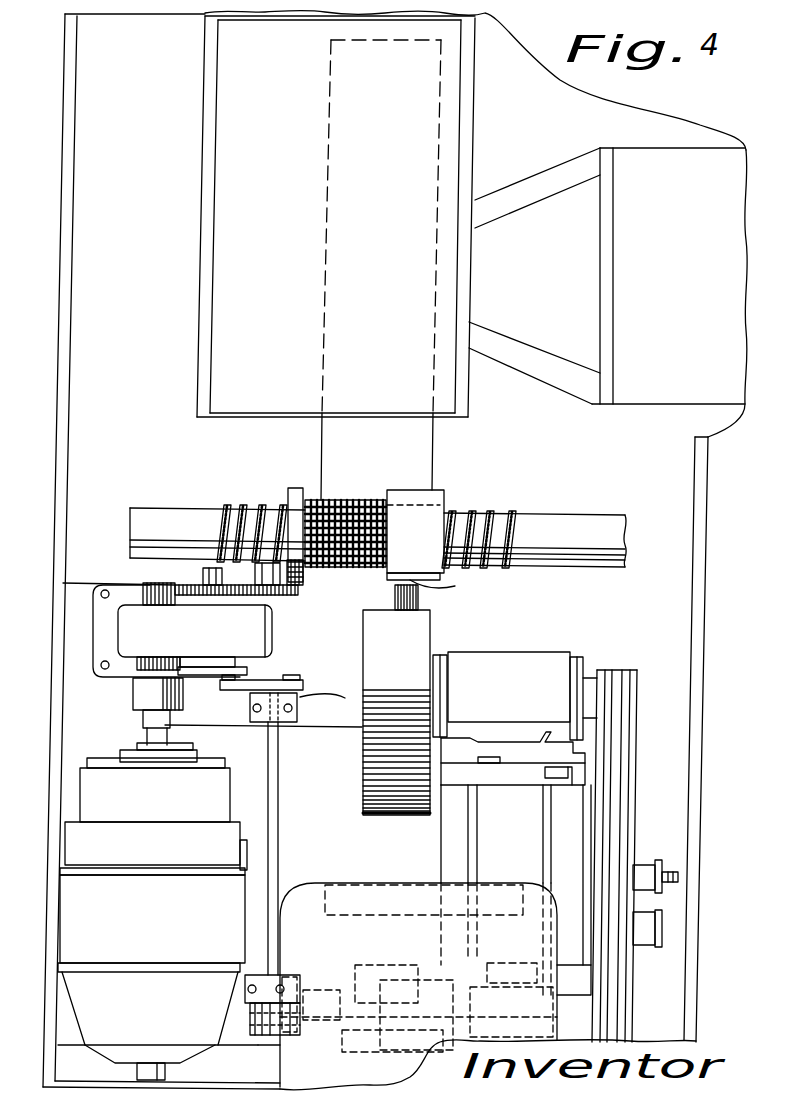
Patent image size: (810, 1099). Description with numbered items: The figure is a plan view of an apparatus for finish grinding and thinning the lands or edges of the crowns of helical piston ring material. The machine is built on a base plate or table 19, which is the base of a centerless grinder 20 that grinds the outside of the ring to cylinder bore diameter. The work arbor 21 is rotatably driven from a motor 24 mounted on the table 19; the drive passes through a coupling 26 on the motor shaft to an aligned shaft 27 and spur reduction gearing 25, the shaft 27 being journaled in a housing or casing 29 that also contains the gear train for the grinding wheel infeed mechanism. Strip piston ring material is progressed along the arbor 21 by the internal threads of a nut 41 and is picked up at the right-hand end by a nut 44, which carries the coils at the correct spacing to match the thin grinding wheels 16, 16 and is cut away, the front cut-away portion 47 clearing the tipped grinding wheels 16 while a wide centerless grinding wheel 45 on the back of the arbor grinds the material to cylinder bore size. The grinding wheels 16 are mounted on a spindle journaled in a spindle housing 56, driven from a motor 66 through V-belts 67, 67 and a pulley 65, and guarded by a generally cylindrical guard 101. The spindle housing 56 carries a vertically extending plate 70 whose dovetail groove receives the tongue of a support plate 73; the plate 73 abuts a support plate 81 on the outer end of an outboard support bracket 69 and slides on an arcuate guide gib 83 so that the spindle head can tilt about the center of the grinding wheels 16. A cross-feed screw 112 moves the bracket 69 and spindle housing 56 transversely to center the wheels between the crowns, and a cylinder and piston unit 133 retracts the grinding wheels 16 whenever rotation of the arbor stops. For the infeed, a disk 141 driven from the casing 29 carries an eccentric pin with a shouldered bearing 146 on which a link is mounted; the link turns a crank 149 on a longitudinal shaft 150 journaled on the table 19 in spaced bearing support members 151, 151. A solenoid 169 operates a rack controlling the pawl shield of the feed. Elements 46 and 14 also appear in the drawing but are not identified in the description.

The base plate or table 19 is at (75, 695).
The centerless grinder 20 is at (198, 363).
The bracket 46 is at (607, 147).
The wide centerless grinding wheel 45 is at (440, 447).
The rod with spring discs 14 is at (215, 505).
The nut 41 is at (290, 492).
The work arbor 21 is at (313, 500).
The nut 44 is at (445, 497).
The cut-away portion 47 is at (443, 589).
The grinding wheels 16 is at (395, 597).
The shaft 27 is at (157, 578).
The spur reduction gearing 25 is at (300, 590).
The housing or casing 29 is at (125, 637).
The coupling 26 is at (140, 695).
The disk 141 is at (245, 672).
The shouldered bearing 146 is at (272, 684).
The crank 149 is at (330, 709).
The bearing support members 151 is at (305, 722).
The longitudinal shaft 150 is at (275, 845).
The guard 101 is at (368, 773).
The spindle housing 56 is at (520, 640).
The support plate 73 is at (545, 755).
The vertically extending plate 70 is at (555, 730).
The arcuate guide gib 83 is at (495, 763).
The support plate 81 is at (562, 786).
The pulley 65 is at (598, 672).
The V-belts 67 is at (625, 678).
The outboard support bracket 69 is at (470, 840).
The motor 66 is at (340, 882).
The solenoid 169 is at (355, 995).
The cross-feed screw 112 is at (672, 870).
The cylinder and piston unit 133 is at (645, 945).
The motor 24 is at (112, 1050).